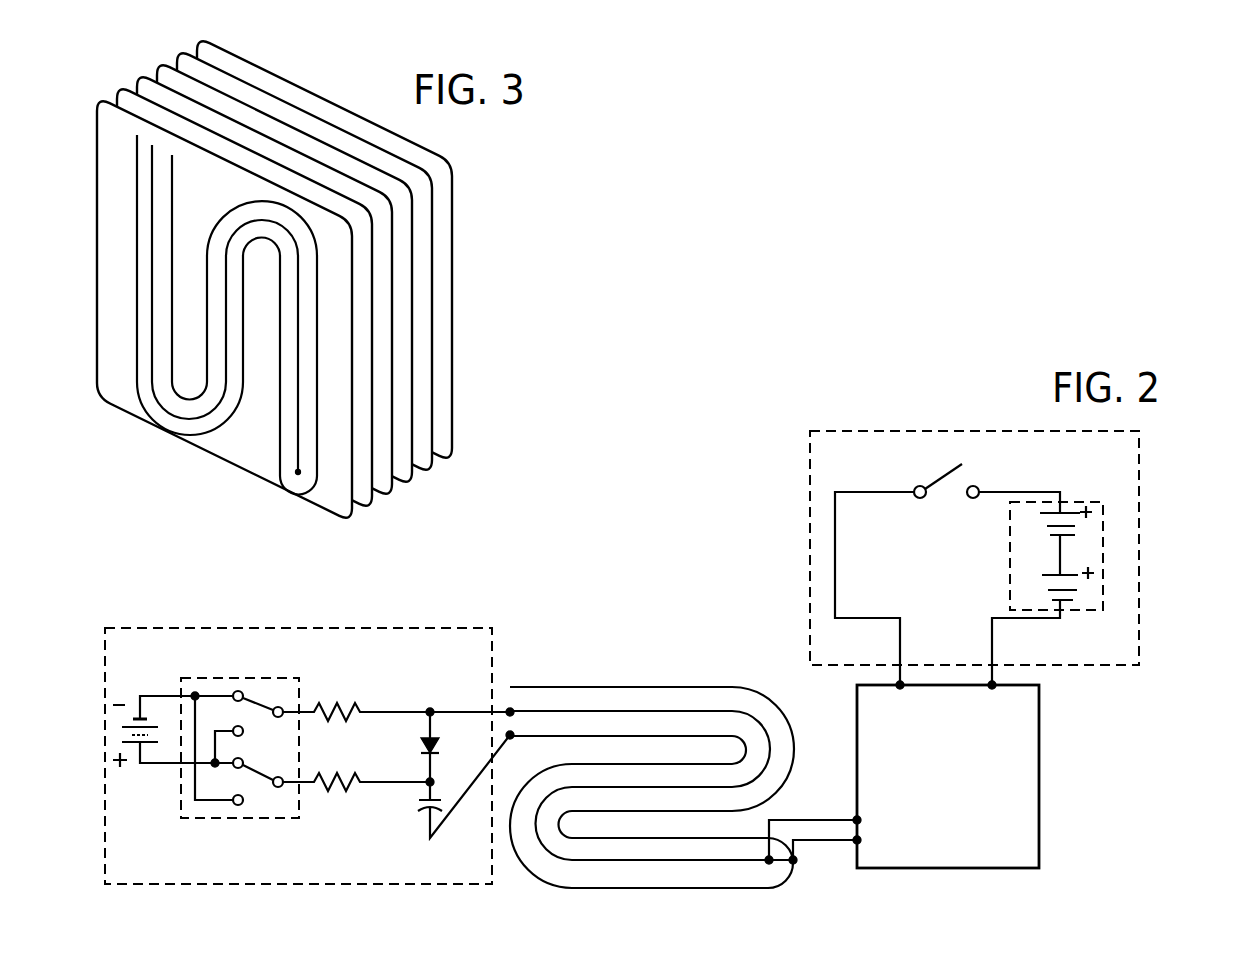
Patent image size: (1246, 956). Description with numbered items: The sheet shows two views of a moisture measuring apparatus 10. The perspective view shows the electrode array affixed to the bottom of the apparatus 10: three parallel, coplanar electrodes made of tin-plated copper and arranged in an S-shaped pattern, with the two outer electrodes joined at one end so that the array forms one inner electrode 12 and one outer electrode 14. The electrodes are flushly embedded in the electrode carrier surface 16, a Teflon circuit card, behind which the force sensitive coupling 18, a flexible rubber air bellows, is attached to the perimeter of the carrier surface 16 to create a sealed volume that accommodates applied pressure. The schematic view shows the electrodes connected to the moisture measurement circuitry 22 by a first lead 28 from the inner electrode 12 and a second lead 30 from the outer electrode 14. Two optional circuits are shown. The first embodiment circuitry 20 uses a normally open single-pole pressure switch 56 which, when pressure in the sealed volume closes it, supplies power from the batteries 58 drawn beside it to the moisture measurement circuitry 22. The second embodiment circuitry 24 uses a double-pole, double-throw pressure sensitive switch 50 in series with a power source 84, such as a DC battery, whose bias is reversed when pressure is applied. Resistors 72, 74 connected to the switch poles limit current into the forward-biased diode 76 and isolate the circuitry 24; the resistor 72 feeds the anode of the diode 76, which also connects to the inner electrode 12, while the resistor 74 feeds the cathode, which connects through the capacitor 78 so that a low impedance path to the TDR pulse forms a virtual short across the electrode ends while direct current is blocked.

In FIG. 3, the apparatus 10 is at (289, 279).
In FIG. 3, the inner electrode 12 is at (298, 390).
In FIG. 2, the inner electrode 12 is at (567, 709).
In FIG. 3, the outer electrode 14 is at (317, 432).
In FIG. 2, the outer electrode 14 is at (675, 686).
In FIG. 3, the electrode carrier surface 16 is at (333, 260).
In FIG. 3, the force sensitive coupling 18 is at (453, 318).
In FIG. 2, the first embodiment circuitry 20 is at (888, 431).
In FIG. 2, the moisture measurement circuitry 22 is at (1040, 787).
In FIG. 2, the second embodiment circuitry 24 is at (297, 628).
In FIG. 2, the first lead 28 is at (812, 820).
In FIG. 2, the second lead 30 is at (826, 843).
In FIG. 2, the double-pole, double-throw pressure sensitive switch 50 is at (273, 818).
In FIG. 2, the single-pole pressure switch 56 is at (943, 477).
In FIG. 2, the battery 58 is at (1080, 500).
In FIG. 2, the resistor 72 is at (320, 706).
In FIG. 2, the resistor 74 is at (358, 788).
In FIG. 2, the forward-biased diode 76 is at (436, 744).
In FIG. 2, the capacitor 78 is at (423, 806).
In FIG. 2, the power source 84 is at (120, 727).